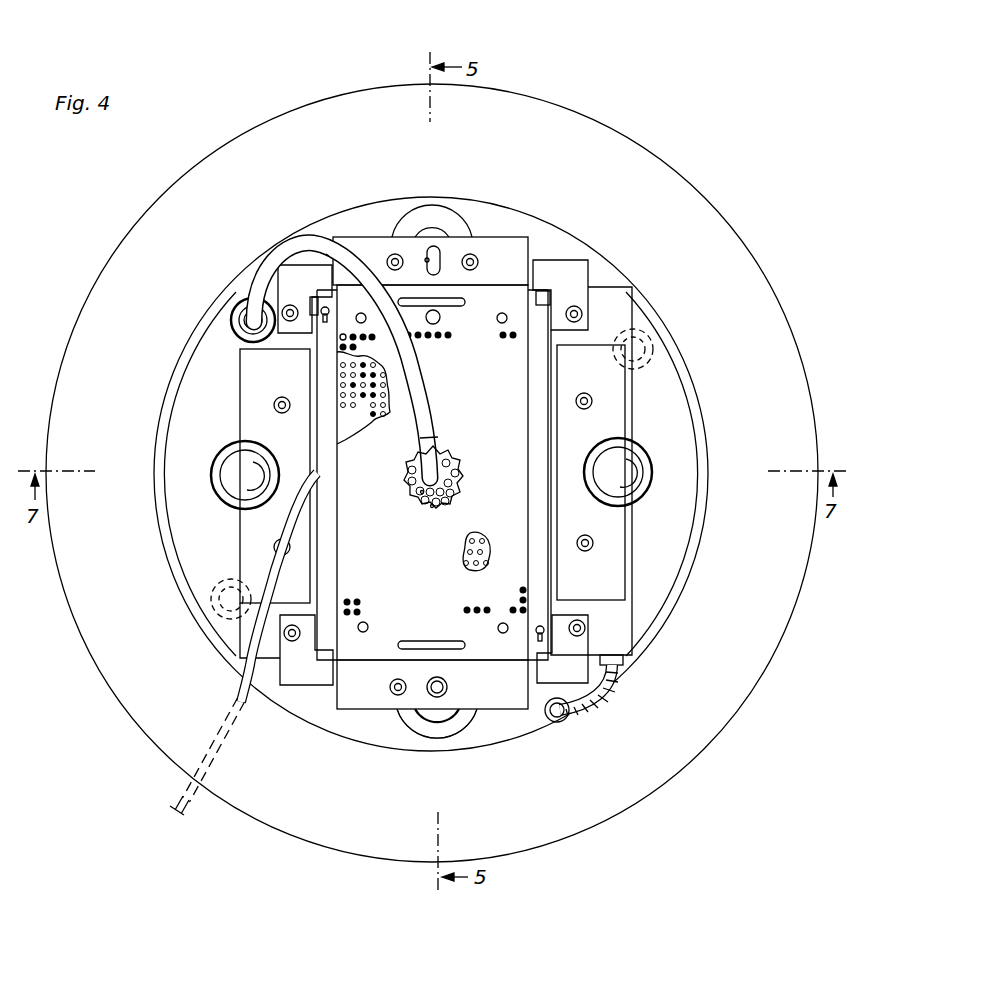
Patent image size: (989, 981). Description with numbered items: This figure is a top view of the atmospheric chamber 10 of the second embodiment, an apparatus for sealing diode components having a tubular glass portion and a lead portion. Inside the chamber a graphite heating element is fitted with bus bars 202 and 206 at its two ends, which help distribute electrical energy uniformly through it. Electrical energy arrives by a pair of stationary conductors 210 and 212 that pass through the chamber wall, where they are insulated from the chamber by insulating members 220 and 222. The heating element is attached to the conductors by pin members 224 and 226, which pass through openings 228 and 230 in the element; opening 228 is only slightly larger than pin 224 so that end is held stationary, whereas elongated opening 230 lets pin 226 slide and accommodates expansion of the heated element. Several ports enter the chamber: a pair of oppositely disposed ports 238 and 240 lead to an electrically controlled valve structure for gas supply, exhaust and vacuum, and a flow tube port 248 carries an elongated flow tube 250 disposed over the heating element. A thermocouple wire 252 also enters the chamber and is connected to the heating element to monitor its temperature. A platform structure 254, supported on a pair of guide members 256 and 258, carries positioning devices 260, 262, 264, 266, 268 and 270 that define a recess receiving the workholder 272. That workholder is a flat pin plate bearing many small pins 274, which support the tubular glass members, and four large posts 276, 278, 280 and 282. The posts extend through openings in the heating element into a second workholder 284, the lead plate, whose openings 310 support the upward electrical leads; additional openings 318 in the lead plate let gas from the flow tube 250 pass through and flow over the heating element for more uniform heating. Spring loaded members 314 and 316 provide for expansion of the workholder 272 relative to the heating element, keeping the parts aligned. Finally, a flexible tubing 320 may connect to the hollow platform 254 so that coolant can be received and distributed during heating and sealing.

The atmospheric chamber 10 is at (673, 395).
The bus bar 202 is at (372, 695).
The bus bar 206 is at (363, 247).
The electrical conductor 210 is at (438, 717).
The electrical conductor 212 is at (432, 228).
The insulating member 220 is at (450, 735).
The insulating member 222 is at (453, 222).
The pin member 224 is at (424, 722).
The pin member 226 is at (426, 258).
The opening 228 is at (435, 686).
The elongated opening 230 is at (430, 246).
The port 238 is at (215, 612).
The port 240 is at (646, 339).
The flow tube port 248 is at (240, 322).
The flow tube 250 is at (425, 410).
The thermocouple wire 252 is at (274, 535).
The platform structure 254 is at (628, 306).
The guide member 256 is at (618, 470).
The guide member 258 is at (236, 468).
The positioning device 260 is at (305, 673).
The positioning device 262 is at (560, 668).
The positioning device 264 is at (291, 277).
The positioning device 266 is at (577, 273).
The positioning device 268 is at (255, 394).
The positioning device 270 is at (605, 408).
The workholder 272 is at (328, 360).
The small pins 274 is at (343, 414).
The post 276 is at (506, 631).
The post 278 is at (510, 297).
The post 280 is at (370, 622).
The post 282 is at (357, 321).
The second workholder 284 is at (457, 458).
The openings 310 is at (432, 506).
The spring loaded member 314 is at (542, 292).
The spring loaded member 316 is at (326, 254).
The additional openings 318 is at (423, 493).
The flexible tubing 320 is at (608, 687).